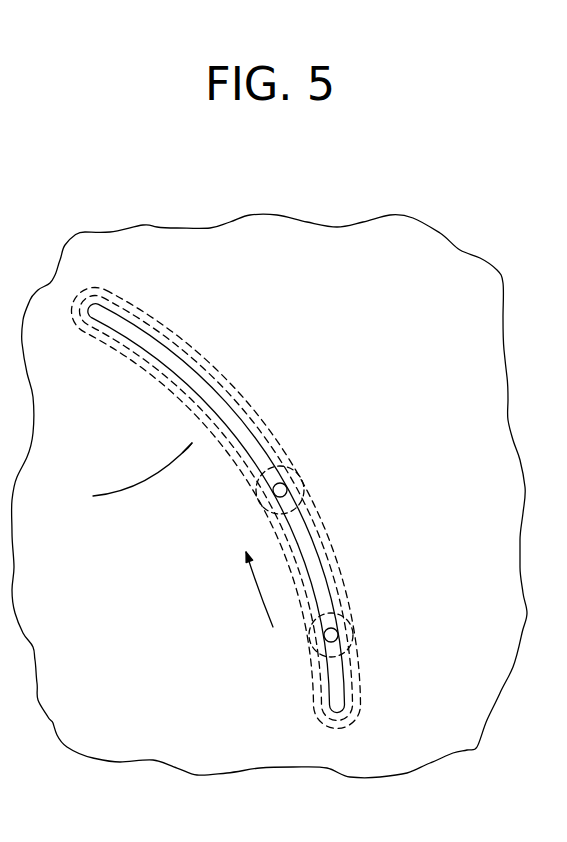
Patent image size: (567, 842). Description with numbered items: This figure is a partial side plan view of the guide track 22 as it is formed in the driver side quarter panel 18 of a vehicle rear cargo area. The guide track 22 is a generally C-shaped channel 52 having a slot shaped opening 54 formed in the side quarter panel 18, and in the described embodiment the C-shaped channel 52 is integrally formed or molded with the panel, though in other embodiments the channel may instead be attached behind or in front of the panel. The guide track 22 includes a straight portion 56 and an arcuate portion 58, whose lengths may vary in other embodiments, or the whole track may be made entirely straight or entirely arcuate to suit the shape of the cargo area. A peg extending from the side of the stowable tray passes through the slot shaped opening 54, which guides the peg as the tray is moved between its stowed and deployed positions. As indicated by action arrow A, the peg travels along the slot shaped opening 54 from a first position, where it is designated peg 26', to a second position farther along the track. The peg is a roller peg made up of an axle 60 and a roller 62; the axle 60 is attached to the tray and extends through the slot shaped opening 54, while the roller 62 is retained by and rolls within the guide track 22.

The driver side quarter panel 18 is at (111, 697).
The guide track 22 is at (126, 476).
The peg in first position 26' is at (390, 678).
The C-shaped channel 52 is at (335, 548).
The slot shaped opening 54 is at (250, 437).
The straight portion 56 is at (333, 596).
The arcuate portion 58 is at (185, 332).
The axle 60 is at (327, 642).
The roller 62 is at (262, 484).
The action arrow A is at (262, 595).